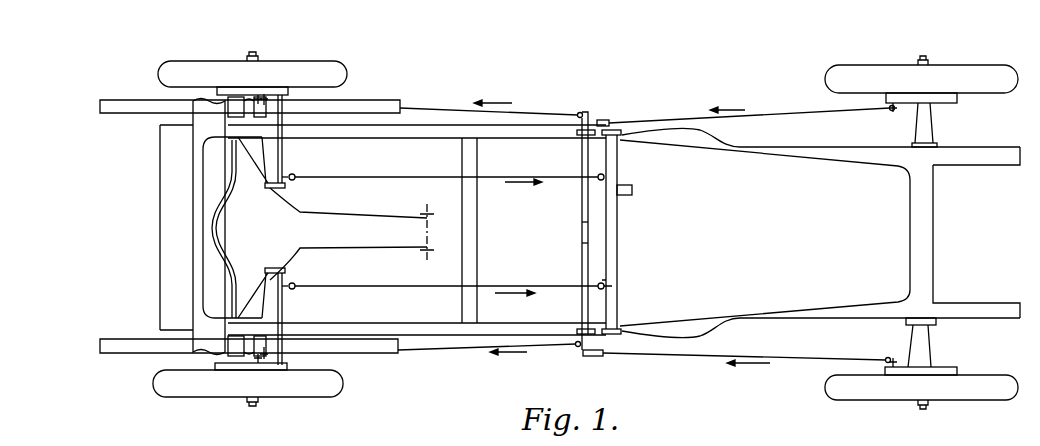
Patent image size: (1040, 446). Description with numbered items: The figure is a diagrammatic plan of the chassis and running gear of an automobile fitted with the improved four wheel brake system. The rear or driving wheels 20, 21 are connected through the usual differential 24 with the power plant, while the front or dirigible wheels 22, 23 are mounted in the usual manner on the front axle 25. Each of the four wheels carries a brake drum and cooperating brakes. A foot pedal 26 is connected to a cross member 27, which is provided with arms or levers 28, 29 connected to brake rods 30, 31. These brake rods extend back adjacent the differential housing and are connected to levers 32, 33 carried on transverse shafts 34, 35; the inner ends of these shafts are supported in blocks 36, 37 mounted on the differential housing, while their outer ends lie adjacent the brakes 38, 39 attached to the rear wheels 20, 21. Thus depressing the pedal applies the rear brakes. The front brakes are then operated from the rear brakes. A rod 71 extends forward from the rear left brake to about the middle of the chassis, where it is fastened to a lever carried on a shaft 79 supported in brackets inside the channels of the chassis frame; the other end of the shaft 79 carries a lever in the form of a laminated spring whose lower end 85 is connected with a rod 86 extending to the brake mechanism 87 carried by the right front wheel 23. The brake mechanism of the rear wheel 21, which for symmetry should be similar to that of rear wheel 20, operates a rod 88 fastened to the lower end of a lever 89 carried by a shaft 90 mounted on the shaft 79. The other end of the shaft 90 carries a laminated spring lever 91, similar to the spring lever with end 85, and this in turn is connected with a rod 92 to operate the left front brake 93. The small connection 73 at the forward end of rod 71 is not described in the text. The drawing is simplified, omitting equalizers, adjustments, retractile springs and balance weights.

The rear wheel 20 is at (348, 73).
The rear wheel 21 is at (350, 381).
The front wheel 22 is at (1009, 84).
The right front wheel 23 is at (983, 378).
The differential 24 is at (232, 227).
The front axle 25 is at (930, 128).
The foot pedal 26 is at (632, 189).
The cross member 27 is at (620, 216).
The arm or lever 28 is at (582, 188).
The arm or lever 29 is at (604, 284).
The brake rod 30 is at (505, 176).
The brake rod 31 is at (505, 290).
The lever 32 is at (296, 176).
The lever 33 is at (298, 284).
The transverse shaft 34 is at (284, 160).
The transverse shaft 35 is at (283, 316).
The block 36 is at (268, 189).
The block 37 is at (268, 271).
The brake 38 is at (246, 91).
The brake 39 is at (232, 369).
The rod 71 is at (435, 108).
The rod end connection 73 is at (583, 110).
The shaft 79 is at (582, 244).
The lower end of spring lever 85 is at (596, 357).
The rod 86 is at (727, 354).
The brake mechanism 87 is at (945, 367).
The rod 88 is at (442, 353).
The lever 89 is at (578, 348).
The shaft 90 is at (582, 226).
The laminated spring lever 91 is at (604, 120).
The rod 92 is at (766, 120).
The left front brake 93 is at (920, 94).